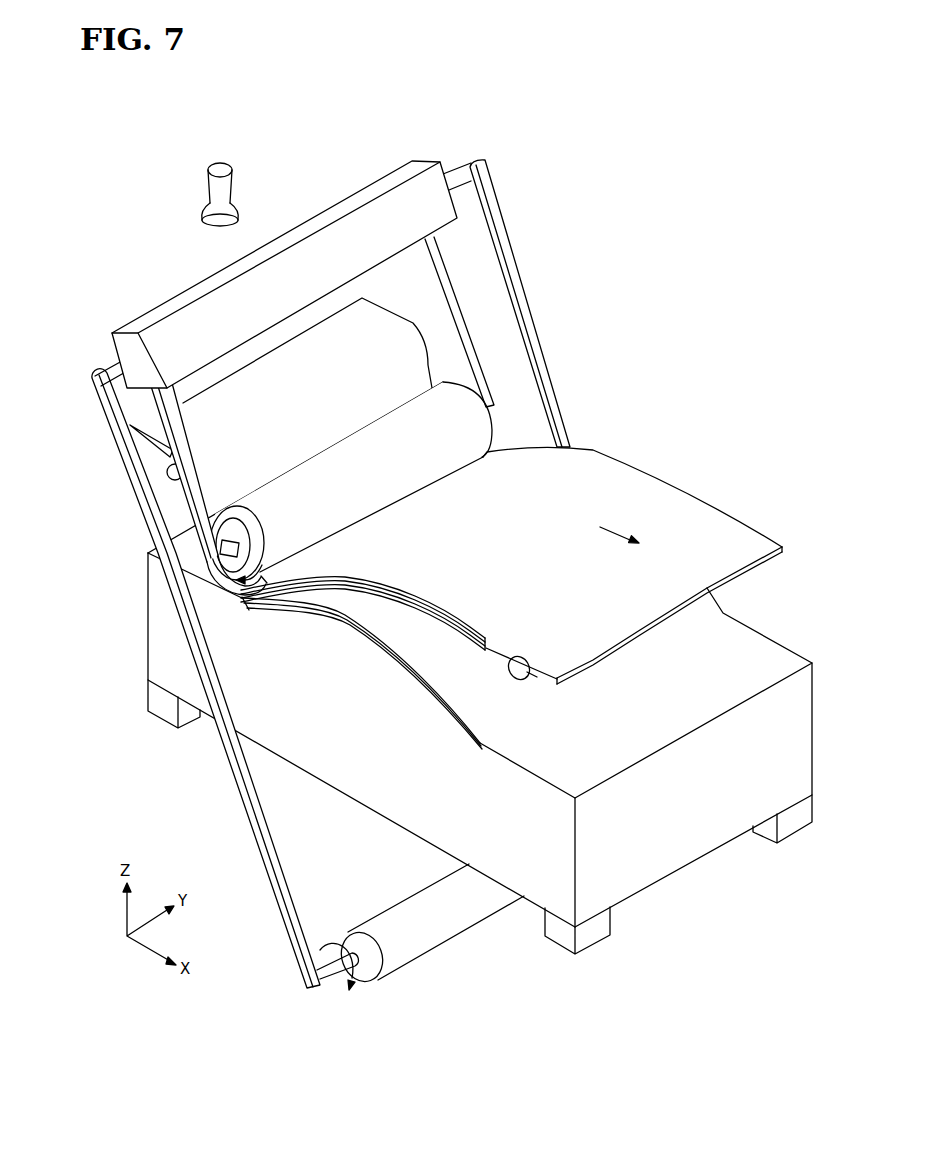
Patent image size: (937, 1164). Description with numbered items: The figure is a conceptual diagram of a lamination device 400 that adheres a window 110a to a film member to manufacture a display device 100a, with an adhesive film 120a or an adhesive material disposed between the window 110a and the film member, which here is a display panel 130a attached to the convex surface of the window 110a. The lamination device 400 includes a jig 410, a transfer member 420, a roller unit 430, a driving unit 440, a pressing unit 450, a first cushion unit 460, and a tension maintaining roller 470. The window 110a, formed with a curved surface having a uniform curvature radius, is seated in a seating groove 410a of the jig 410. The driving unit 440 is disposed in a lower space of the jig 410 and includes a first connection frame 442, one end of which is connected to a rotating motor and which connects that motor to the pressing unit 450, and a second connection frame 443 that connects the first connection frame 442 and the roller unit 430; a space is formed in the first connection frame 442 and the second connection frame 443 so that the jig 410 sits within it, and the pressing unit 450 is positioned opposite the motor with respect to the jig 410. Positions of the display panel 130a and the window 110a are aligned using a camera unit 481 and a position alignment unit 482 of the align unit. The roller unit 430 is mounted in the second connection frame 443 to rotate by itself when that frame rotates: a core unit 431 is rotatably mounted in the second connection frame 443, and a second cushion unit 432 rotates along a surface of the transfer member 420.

The lamination device 400 is at (679, 322).
The jig 410 is at (677, 838).
The seating groove 410a is at (432, 695).
The transfer member 420 is at (746, 545).
The roller unit 430 is at (297, 407).
The core unit 431 is at (265, 550).
The second cushion unit 432 is at (234, 534).
The driving unit 440 is at (300, 574).
The first connection frame 442 is at (177, 597).
The second connection frame 443 is at (150, 552).
The pressing unit 450 is at (388, 186).
The first cushion unit 460 is at (455, 722).
The tension maintaining roller 470 is at (521, 667).
The camera unit 481 is at (220, 163).
The position alignment unit 482 is at (593, 932).
The display device 100a is at (550, 578).
The window 110a is at (423, 668).
The adhesive film 120a is at (432, 612).
The display panel 130a is at (402, 597).